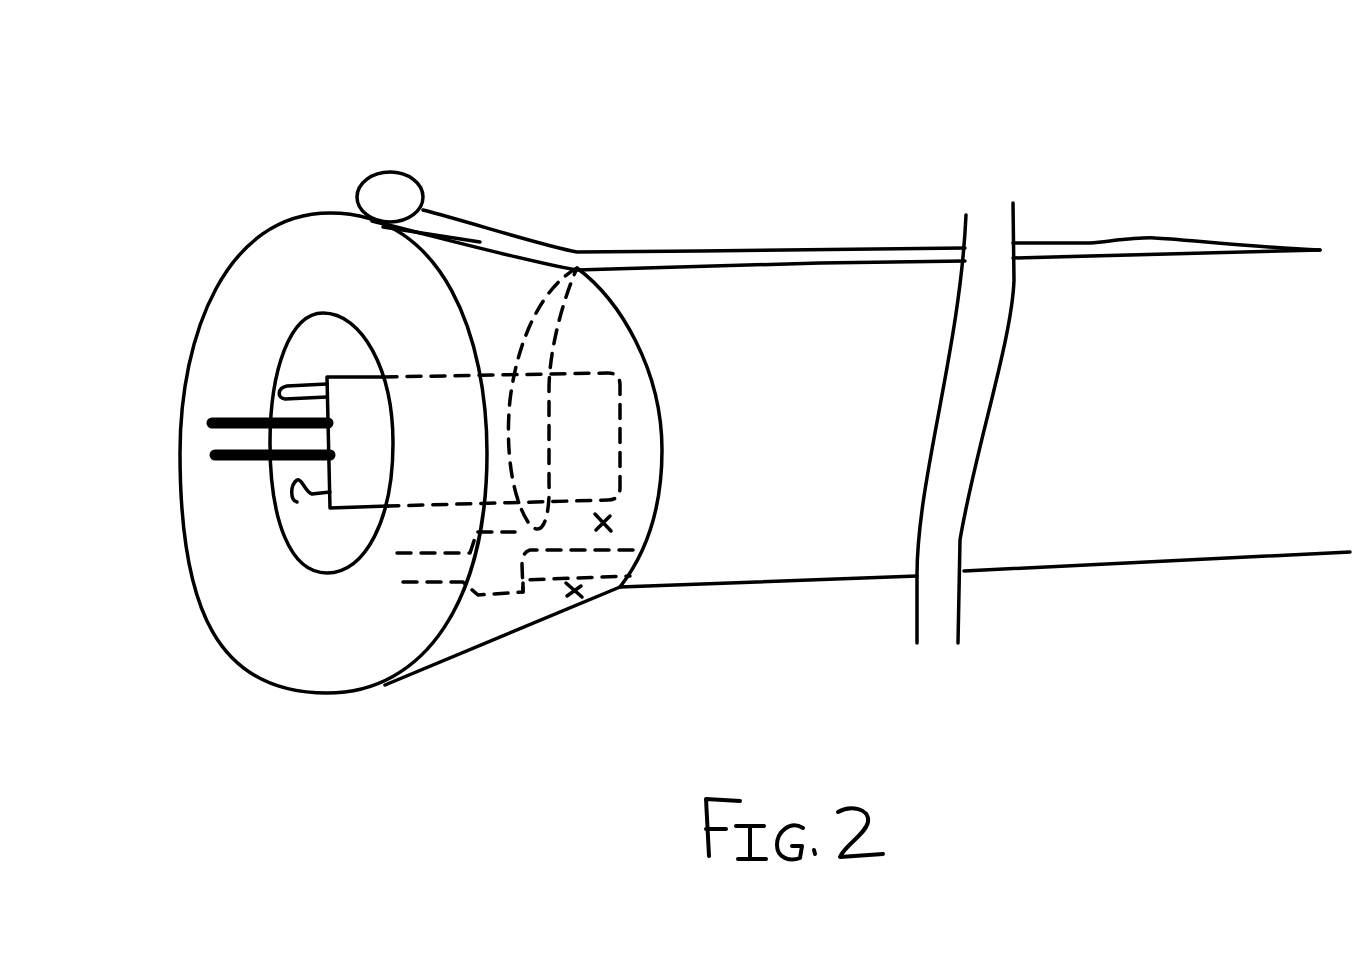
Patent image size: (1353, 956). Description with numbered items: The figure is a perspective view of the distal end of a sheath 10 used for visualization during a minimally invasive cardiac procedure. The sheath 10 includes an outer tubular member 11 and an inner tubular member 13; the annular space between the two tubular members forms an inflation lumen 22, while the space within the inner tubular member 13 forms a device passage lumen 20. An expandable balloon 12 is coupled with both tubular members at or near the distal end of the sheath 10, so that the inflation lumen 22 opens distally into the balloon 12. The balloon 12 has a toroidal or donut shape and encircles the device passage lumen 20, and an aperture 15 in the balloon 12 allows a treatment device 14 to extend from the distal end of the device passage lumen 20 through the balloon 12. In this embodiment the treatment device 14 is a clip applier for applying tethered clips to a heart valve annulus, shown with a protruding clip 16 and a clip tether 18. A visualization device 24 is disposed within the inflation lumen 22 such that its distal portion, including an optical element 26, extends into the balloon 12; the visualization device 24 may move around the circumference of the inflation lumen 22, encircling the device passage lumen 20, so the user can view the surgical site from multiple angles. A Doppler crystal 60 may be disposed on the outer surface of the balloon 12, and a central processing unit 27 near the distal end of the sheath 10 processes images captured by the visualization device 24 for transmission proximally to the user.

The sheath 10 is at (772, 162).
The outer tubular member 11 is at (745, 285).
The expandable balloon 12 is at (331, 284).
The inner tubular member 13 is at (577, 333).
The treatment device 14 is at (357, 478).
The aperture 15 is at (310, 540).
The protruding clip 16 is at (297, 502).
The clip tether 18 is at (226, 400).
The device passage lumen 20 is at (604, 522).
The inflation lumen 22 is at (640, 447).
The visualization device 24 is at (575, 567).
The optical element 26 is at (393, 563).
The central processing unit 27 is at (493, 578).
The Doppler crystal 60 is at (393, 162).